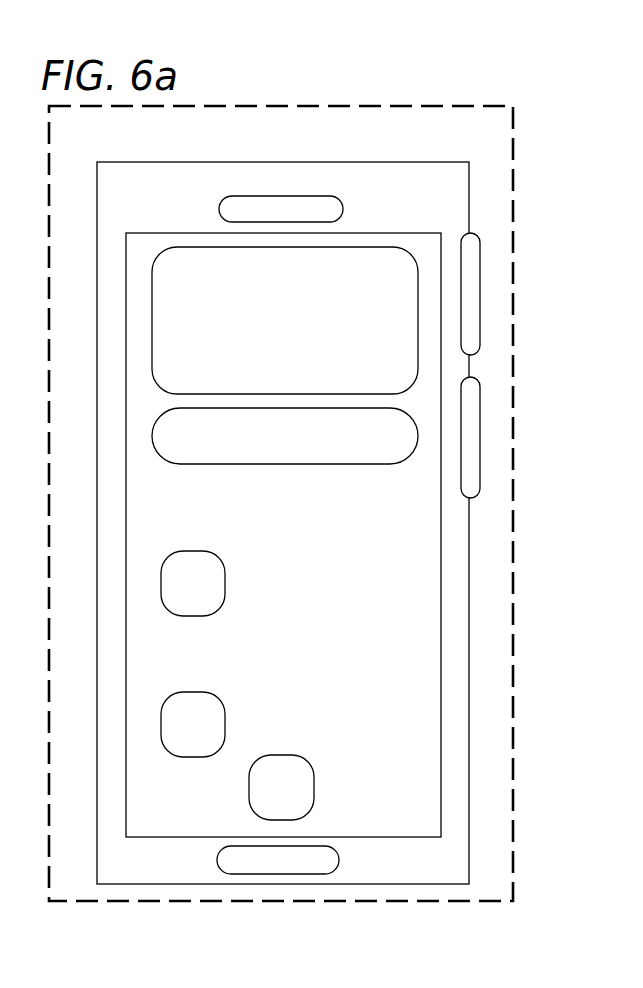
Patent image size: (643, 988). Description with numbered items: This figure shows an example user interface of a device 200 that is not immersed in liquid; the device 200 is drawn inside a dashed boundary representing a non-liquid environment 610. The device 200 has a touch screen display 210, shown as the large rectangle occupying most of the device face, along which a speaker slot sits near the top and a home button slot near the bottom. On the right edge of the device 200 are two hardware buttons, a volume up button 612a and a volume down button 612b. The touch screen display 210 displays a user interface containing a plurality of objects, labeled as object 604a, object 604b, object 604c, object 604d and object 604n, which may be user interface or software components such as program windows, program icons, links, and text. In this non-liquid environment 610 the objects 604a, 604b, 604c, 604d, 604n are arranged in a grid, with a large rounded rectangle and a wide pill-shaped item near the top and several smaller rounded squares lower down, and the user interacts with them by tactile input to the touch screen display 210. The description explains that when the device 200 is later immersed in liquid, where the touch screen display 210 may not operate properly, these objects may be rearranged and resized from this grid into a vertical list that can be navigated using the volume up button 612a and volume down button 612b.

The non-liquid environment 610 is at (402, 136).
The device 200 is at (336, 193).
The touch screen display 210 is at (578, 188).
The volume up button 612a is at (632, 235).
The volume down button 612b is at (630, 385).
The object 604a is at (300, 330).
The object 604b is at (300, 442).
The object 604c is at (208, 590).
The object 604n is at (208, 730).
The object 604d is at (297, 796).